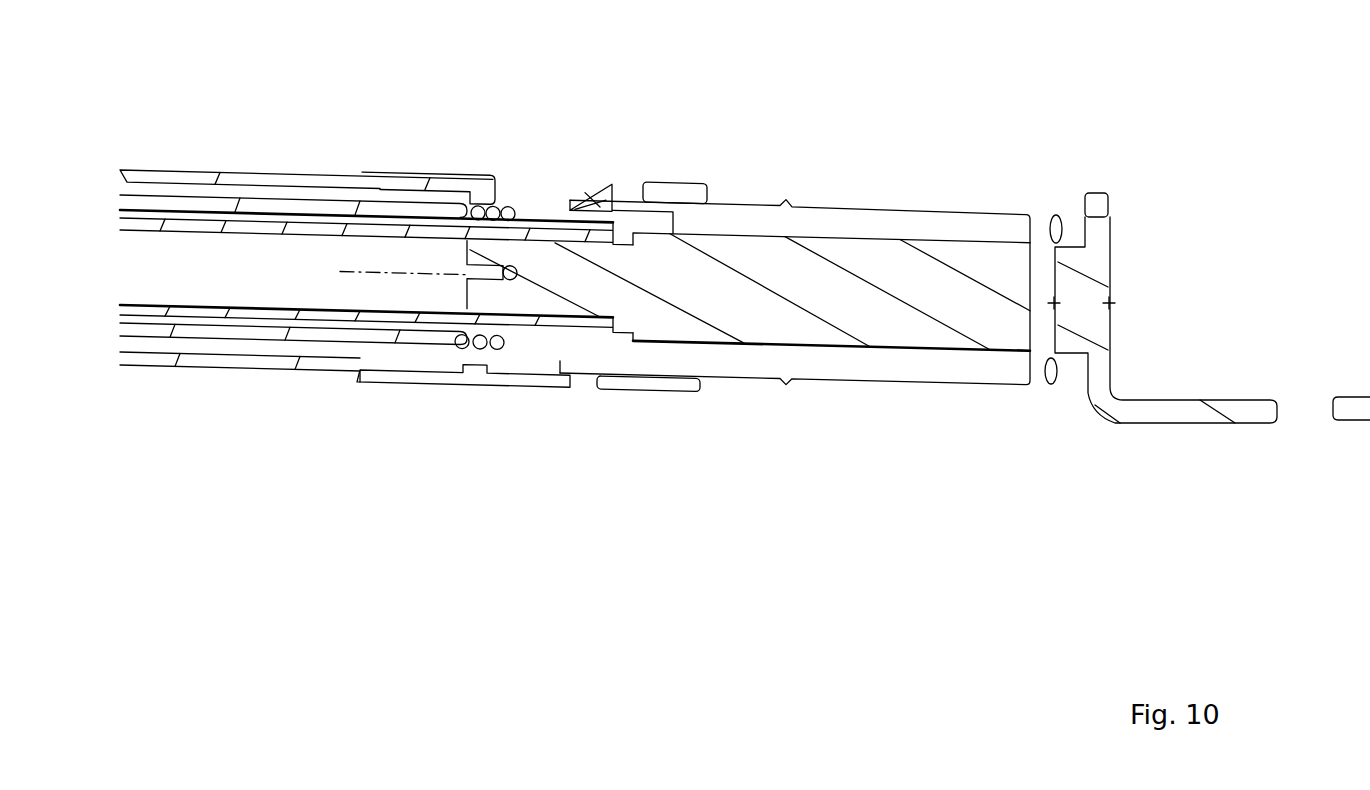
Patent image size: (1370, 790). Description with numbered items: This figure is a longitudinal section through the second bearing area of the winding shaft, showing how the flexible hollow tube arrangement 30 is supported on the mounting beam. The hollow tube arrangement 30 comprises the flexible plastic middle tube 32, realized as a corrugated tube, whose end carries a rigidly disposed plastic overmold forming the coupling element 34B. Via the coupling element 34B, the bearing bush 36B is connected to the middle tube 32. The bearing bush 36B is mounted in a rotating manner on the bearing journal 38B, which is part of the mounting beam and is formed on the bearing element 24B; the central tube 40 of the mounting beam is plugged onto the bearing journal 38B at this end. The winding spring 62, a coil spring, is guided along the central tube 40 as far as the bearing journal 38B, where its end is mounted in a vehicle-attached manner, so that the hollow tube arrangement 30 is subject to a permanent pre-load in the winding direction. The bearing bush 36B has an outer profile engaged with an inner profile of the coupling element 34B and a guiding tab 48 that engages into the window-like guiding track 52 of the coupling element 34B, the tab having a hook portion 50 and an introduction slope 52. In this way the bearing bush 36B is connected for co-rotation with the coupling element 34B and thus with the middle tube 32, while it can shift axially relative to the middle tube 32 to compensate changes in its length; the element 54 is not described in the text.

The hollow tube arrangement 30 is at (246, 158).
The middle tube 32 is at (250, 366).
The coupling element 34B is at (538, 377).
The bearing bush 36B is at (900, 193).
The bearing journal 38B is at (900, 312).
The central tube 40 is at (406, 318).
The guiding tab 48 is at (624, 190).
The hook portion 50 is at (596, 193).
The guiding track / introduction slope 52 is at (633, 190).
The latch spring 54 is at (598, 180).
The winding spring 62 is at (508, 196).
The bearing element 24B is at (1112, 303).